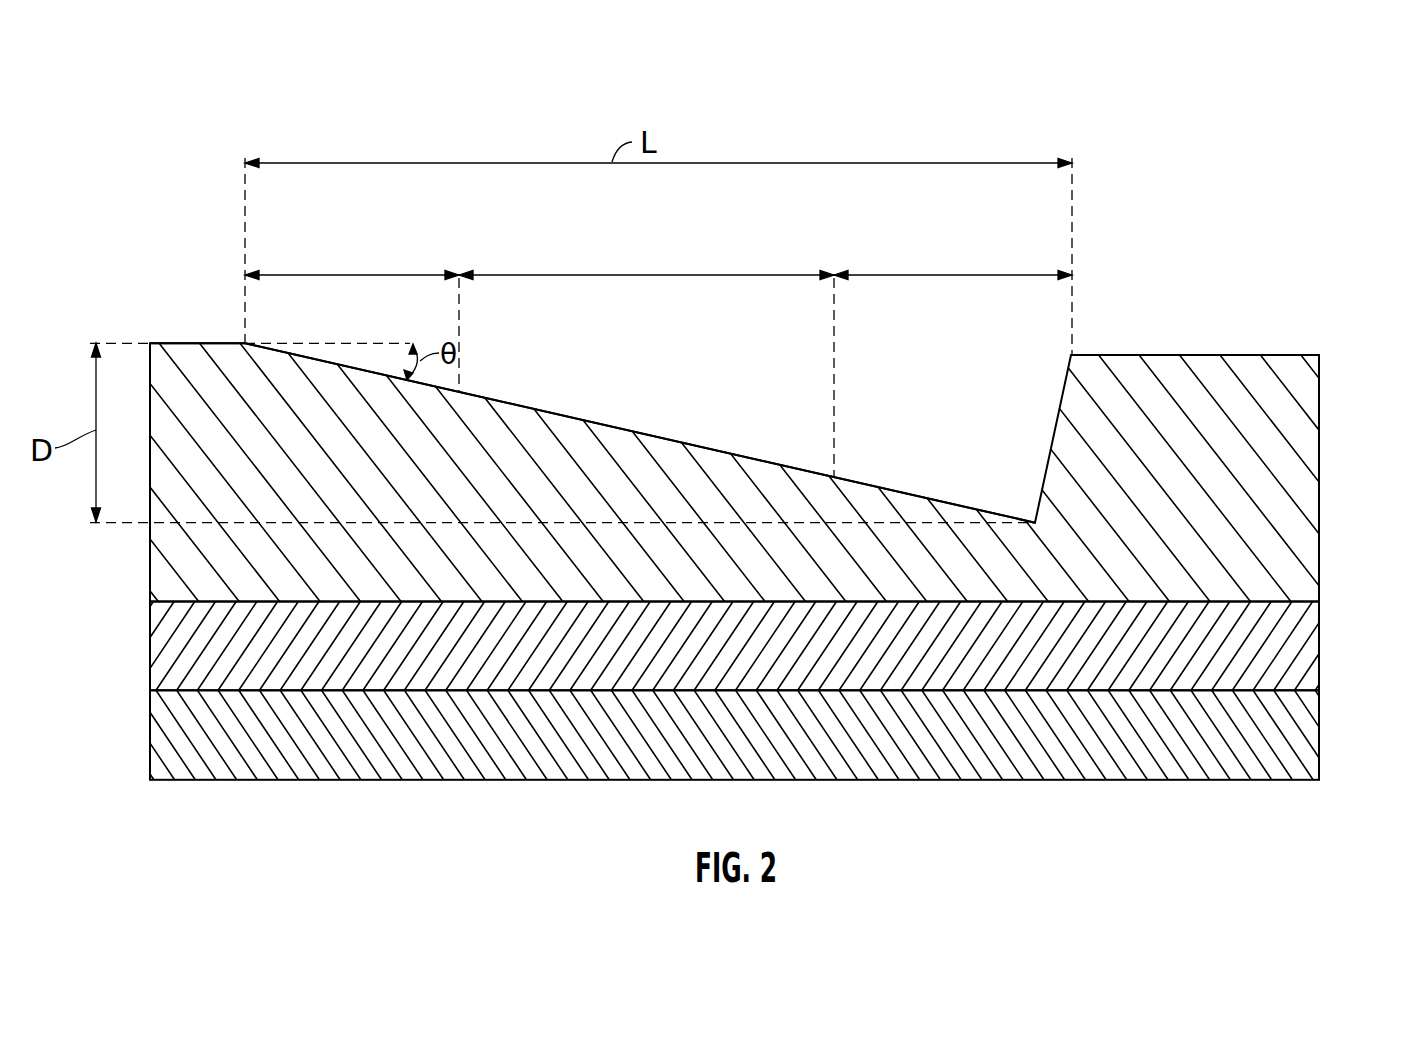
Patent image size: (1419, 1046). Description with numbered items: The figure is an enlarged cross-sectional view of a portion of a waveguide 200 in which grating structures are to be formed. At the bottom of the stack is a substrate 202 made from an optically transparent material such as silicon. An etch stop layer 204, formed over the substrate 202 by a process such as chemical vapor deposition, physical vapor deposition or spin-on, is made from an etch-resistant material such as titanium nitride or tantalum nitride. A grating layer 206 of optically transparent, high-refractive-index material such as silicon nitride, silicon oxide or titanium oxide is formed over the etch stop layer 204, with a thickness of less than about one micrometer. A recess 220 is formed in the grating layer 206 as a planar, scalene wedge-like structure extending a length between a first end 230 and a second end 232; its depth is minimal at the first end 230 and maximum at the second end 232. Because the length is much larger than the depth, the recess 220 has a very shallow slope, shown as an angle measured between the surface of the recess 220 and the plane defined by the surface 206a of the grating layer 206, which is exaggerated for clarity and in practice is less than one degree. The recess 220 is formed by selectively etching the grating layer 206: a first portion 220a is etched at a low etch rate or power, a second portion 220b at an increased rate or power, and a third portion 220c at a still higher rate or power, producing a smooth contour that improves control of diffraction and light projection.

The waveguide 200 is at (1099, 73).
The substrate 202 is at (1307, 718).
The etch stop layer 204 is at (1307, 628).
The grating layer 206 is at (1307, 402).
The surface of the grating layer 206a is at (169, 336).
The recess 220 is at (680, 442).
The first portion of the recess 220a is at (316, 274).
The second portion of the recess 220b is at (622, 274).
The third portion of the recess 220c is at (905, 274).
The first end of the recess 230 is at (245, 233).
The second end of the recess 232 is at (1072, 250).